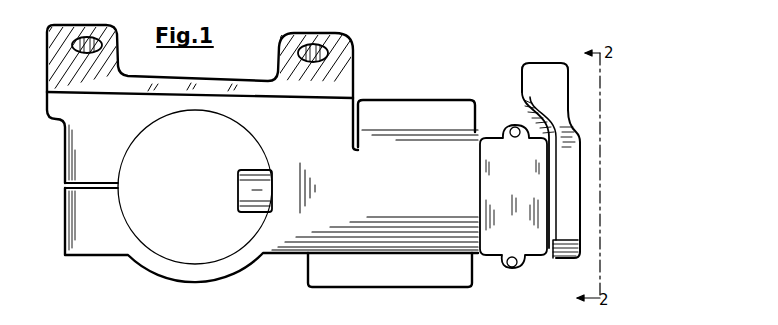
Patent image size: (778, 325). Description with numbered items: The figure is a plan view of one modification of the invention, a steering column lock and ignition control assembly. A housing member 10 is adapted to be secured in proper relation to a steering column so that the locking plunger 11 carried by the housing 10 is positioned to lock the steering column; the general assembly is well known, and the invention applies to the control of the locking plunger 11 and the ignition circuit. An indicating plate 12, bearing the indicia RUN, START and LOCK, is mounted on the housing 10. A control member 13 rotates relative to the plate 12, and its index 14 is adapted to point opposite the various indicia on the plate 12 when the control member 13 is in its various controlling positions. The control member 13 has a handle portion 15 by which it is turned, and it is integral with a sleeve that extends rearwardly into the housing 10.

The housing member 10 is at (297, 117).
The locking plunger 11 is at (256, 192).
The indicating plate 12 is at (503, 196).
The control member 13 is at (567, 176).
The index 14 is at (557, 250).
The handle portion 15 is at (553, 84).